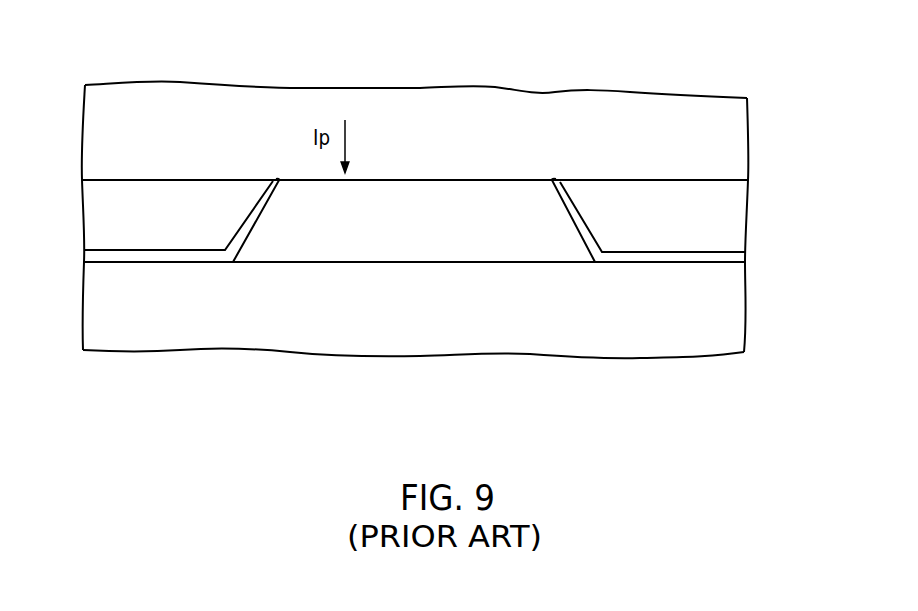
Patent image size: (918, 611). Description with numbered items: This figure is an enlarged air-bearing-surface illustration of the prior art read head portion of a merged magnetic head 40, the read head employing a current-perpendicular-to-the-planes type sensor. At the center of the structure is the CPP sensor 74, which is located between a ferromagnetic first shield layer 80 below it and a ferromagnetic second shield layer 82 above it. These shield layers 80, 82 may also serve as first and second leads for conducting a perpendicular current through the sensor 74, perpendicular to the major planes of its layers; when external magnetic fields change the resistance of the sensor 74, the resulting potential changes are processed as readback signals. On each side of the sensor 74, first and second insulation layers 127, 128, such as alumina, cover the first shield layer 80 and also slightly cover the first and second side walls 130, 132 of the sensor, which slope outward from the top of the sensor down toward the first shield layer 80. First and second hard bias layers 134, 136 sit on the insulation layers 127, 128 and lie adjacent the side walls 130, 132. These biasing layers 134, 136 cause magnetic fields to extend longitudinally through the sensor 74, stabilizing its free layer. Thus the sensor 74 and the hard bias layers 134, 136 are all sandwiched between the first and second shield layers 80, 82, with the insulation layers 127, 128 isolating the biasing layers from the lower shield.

The merged magnetic head 40 is at (275, 72).
The CPP sensor 74 is at (466, 181).
The first shield layer 80 is at (252, 310).
The second shield layer 82 is at (708, 140).
The first insulation layer 127 is at (130, 253).
The second insulation layer 128 is at (694, 256).
The first side wall 130 is at (262, 207).
The second side wall 132 is at (572, 207).
The first hard bias layer 134 is at (137, 205).
The second hard bias layer 136 is at (700, 192).